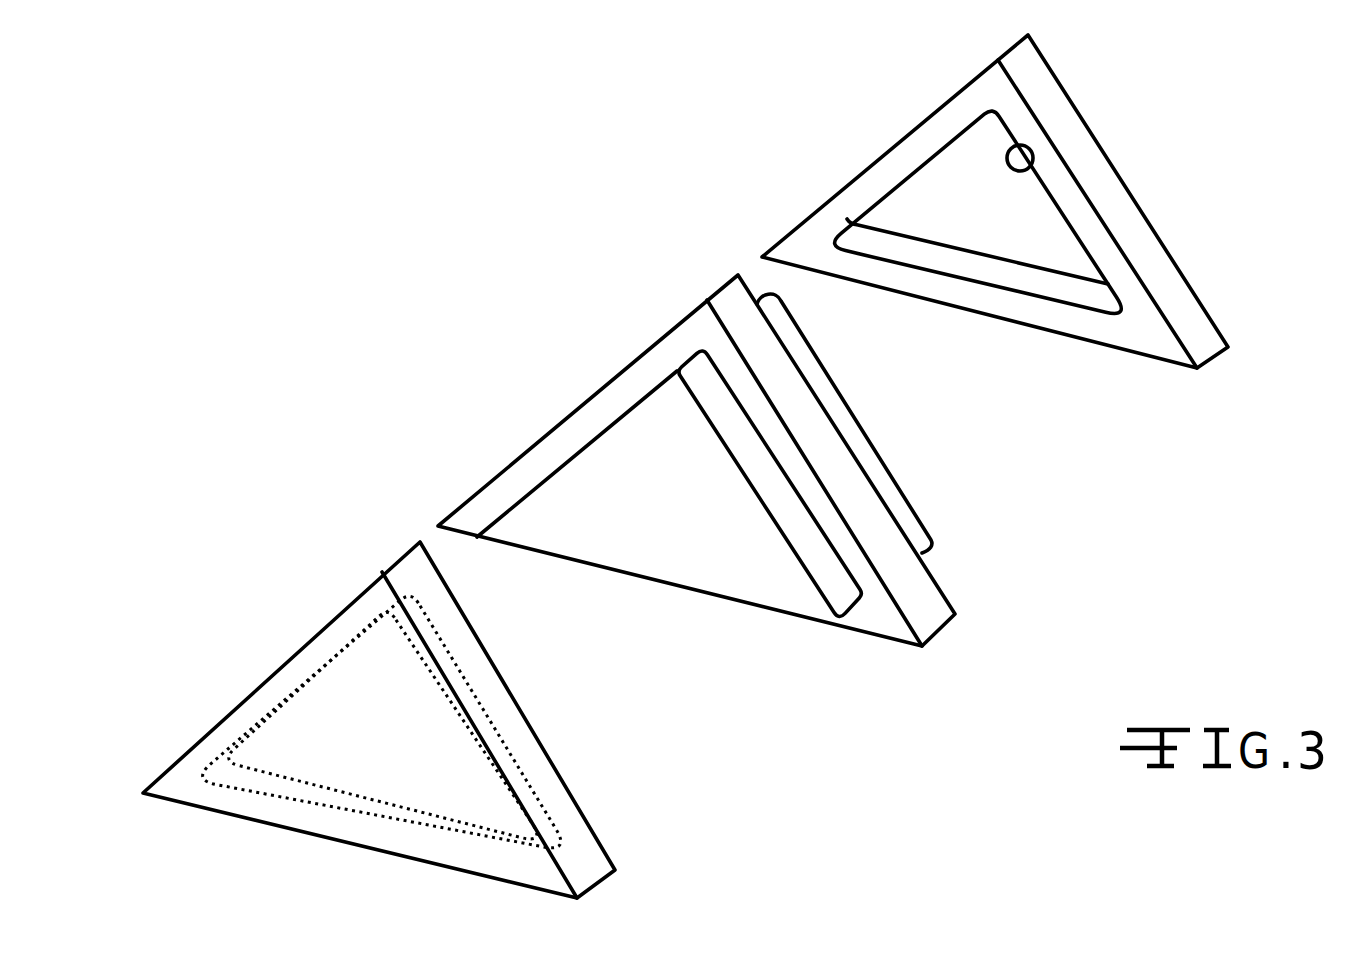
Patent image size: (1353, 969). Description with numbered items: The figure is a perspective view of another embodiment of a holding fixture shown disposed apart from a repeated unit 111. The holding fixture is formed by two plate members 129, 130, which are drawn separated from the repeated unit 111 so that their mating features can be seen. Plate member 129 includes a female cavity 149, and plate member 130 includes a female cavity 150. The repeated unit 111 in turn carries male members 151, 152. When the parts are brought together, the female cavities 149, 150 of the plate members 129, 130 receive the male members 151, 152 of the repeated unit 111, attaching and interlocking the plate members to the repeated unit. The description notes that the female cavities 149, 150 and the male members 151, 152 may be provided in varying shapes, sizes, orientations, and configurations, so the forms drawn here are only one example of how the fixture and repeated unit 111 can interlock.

The plate member 130 is at (1162, 237).
The female cavity 150 is at (1014, 152).
The repeated unit 111 is at (922, 597).
The male member 151 is at (783, 592).
The male member 152 is at (875, 462).
The plate member 129 is at (310, 823).
The female cavity 149 is at (497, 718).